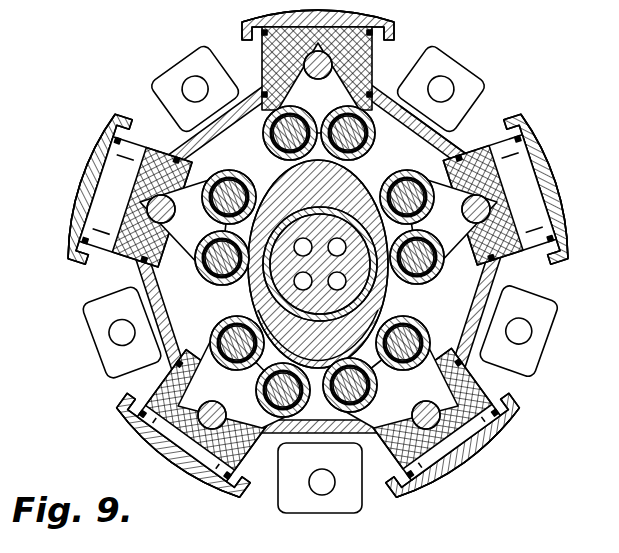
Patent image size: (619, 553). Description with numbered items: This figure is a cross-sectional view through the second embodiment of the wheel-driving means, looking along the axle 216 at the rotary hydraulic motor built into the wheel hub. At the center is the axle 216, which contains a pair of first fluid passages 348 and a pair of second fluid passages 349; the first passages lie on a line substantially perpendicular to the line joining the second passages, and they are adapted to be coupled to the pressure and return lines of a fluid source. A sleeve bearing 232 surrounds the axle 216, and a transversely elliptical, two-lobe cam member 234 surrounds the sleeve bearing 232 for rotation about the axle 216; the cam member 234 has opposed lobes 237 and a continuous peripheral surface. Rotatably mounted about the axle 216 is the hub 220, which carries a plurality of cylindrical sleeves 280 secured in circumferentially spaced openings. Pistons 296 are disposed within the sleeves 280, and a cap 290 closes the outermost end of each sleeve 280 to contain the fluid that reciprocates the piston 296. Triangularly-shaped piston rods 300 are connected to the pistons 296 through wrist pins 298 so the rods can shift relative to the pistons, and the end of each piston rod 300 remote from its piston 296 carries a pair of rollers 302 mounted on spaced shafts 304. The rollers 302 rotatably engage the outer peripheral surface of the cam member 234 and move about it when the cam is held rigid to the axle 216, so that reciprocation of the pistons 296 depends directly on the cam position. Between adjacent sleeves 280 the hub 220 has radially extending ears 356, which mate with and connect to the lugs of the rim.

The axle 216 is at (320, 250).
The hub 220 is at (468, 120).
The sleeve bearing 232 is at (392, 297).
The cam member 234 is at (392, 140).
The lobes 237 is at (318, 264).
The cylindrical sleeves 280 is at (372, 58).
The cap 290 is at (88, 238).
The pistons 296 is at (365, 20).
The wrist pins 298 is at (320, 80).
The piston rods 300 is at (452, 262).
The rollers 302 is at (266, 137).
The shafts 304 is at (228, 287).
The first fluid passages 348 is at (308, 322).
The second fluid passages 349 is at (290, 207).
The ears 356 is at (193, 72).